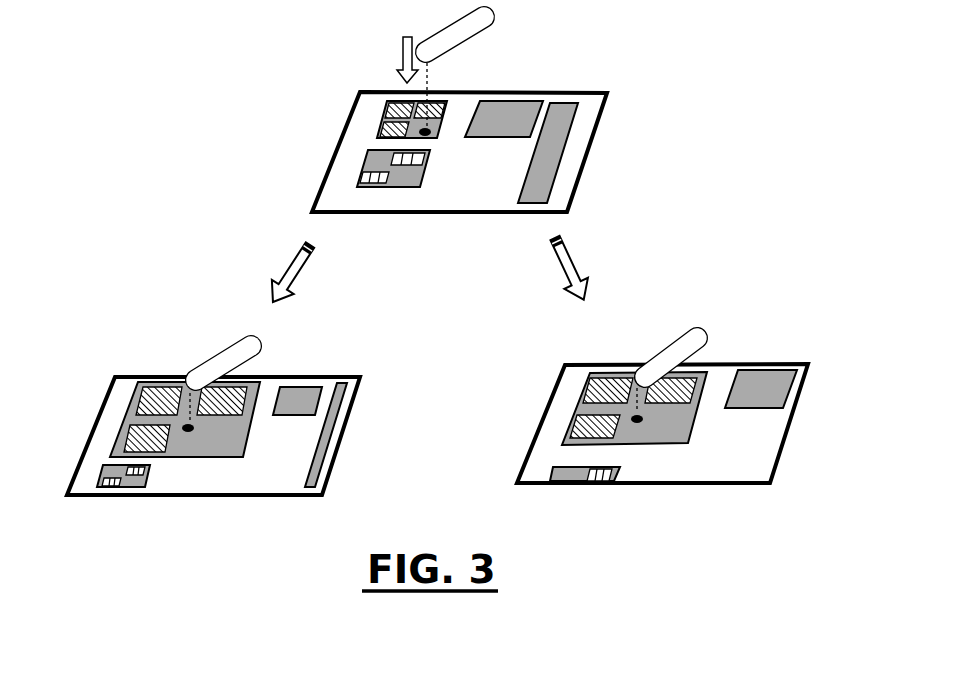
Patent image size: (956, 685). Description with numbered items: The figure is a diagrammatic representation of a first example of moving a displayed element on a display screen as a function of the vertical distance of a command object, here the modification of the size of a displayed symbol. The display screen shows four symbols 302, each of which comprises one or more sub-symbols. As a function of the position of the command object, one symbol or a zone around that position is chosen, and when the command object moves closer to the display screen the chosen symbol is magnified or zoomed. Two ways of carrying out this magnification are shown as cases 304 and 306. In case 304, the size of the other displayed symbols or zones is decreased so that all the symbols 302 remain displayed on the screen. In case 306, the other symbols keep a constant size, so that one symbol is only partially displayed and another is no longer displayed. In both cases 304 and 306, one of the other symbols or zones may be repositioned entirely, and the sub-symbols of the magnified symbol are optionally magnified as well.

The symbols 302 is at (588, 382).
The first magnification case 304 is at (92, 270).
The second magnification case 306 is at (804, 270).